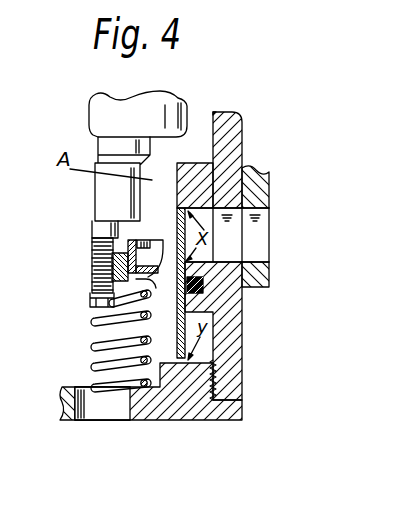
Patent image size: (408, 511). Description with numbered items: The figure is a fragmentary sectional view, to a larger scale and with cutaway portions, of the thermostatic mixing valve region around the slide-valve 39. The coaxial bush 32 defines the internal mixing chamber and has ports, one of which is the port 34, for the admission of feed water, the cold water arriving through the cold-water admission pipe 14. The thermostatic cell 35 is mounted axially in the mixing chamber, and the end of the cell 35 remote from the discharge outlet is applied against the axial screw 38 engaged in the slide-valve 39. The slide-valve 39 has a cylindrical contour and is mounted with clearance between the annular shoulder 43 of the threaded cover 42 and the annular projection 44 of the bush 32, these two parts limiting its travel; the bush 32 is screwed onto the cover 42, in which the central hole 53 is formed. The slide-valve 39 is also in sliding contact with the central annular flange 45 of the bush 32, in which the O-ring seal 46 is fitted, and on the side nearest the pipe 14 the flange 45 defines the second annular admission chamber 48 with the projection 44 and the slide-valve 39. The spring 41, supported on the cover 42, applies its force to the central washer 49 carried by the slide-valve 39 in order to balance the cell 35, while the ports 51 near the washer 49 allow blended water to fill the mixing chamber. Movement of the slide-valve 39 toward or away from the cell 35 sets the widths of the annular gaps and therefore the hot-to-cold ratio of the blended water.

The thermostatic cell 35 is at (168, 88).
The bush 32 is at (237, 119).
The cold-water admission pipe 14 is at (268, 186).
The annular projection 44 is at (188, 181).
The port 34 is at (228, 230).
The axial screw 38 is at (93, 243).
The ports 51 is at (94, 266).
The central washer 49 is at (94, 288).
The second annular admission chamber 48 is at (177, 262).
The spring 41 is at (116, 343).
The slide-valve 39 is at (172, 316).
The O-ring seal 46 is at (200, 284).
The central annular flange 45 is at (204, 292).
The annular shoulder 43 is at (206, 358).
The threaded cover 42 is at (188, 407).
The central hole 53 is at (120, 412).